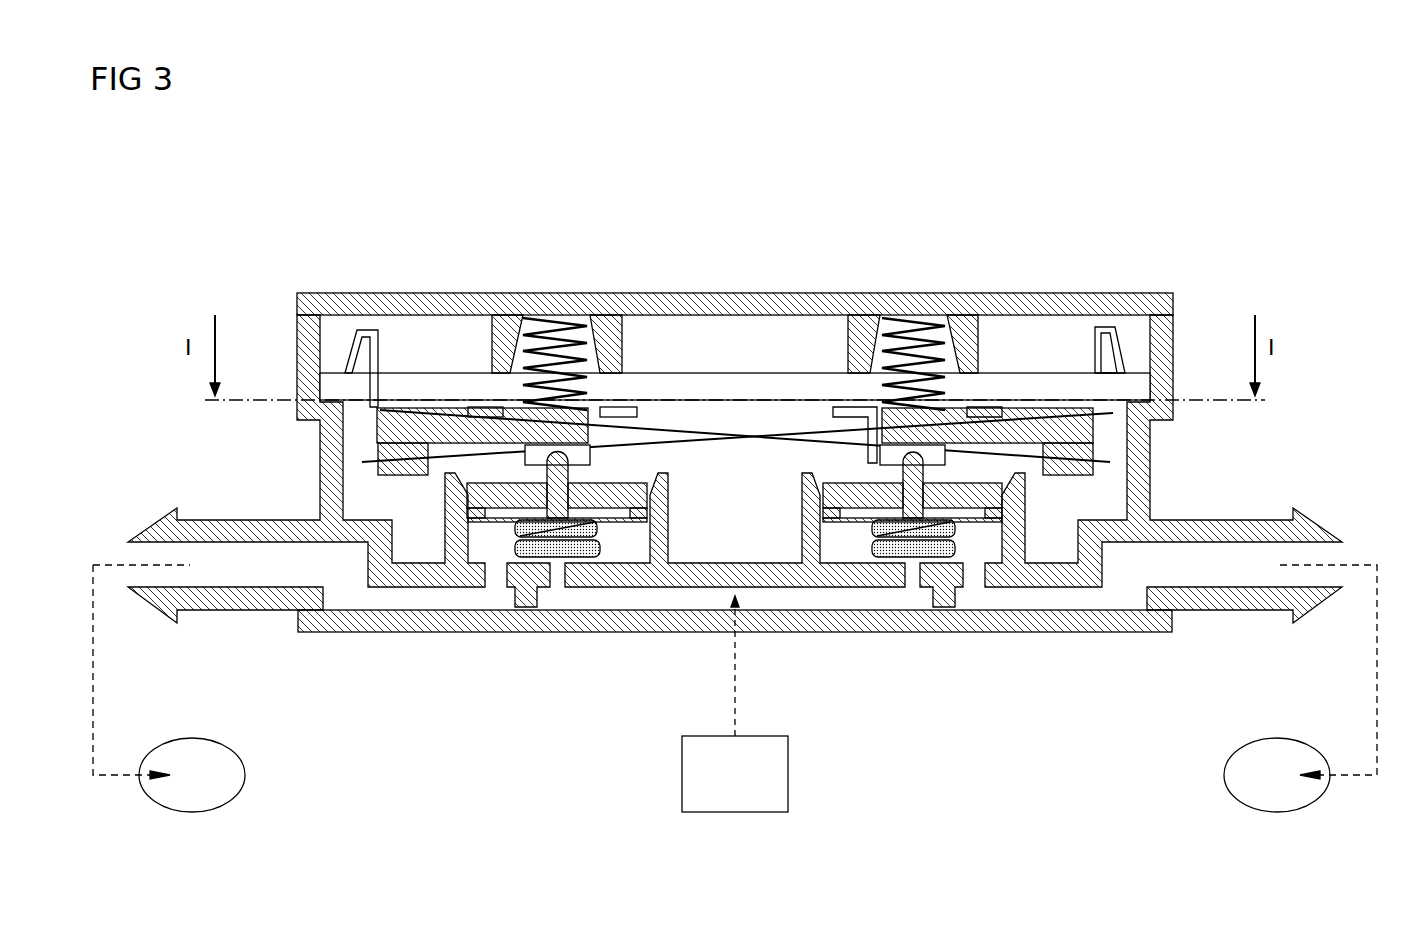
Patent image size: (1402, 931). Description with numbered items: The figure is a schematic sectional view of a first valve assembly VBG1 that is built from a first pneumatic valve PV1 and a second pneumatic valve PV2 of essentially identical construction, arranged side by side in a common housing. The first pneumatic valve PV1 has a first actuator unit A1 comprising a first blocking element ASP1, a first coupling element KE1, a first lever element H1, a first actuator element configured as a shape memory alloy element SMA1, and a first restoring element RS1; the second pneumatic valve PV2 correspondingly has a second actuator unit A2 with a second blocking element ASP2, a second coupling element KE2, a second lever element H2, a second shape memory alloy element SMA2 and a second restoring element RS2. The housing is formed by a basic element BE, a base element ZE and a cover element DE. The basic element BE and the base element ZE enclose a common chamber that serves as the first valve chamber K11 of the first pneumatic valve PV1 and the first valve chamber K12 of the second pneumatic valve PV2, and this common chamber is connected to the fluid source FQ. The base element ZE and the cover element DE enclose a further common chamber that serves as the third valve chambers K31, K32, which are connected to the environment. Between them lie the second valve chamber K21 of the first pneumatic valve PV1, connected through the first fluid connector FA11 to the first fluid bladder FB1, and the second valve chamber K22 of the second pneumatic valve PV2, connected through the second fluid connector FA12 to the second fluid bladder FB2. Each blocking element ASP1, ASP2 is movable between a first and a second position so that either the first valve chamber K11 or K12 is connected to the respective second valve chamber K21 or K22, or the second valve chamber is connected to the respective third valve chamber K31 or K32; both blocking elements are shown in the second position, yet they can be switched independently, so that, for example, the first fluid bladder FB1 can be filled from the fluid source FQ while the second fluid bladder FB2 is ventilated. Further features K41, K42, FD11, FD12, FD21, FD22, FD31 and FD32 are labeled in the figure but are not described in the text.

The cover element DE is at (1160, 300).
The second valve chamber of the first pneumatic valve K21 is at (347, 582).
The second valve chamber of the second pneumatic valve K22 is at (1125, 583).
The first valve chamber of the first pneumatic valve K11 is at (703, 597).
The first valve chamber of the second pneumatic valve K12 is at (793, 597).
The channel K41 is at (617, 545).
The channel K42 is at (1003, 590).
The third valve chamber of the first pneumatic valve K31 is at (740, 455).
The third valve chamber of the second pneumatic valve K32 is at (917, 435).
The valve seat FD21 is at (498, 575).
The valve seat FD22 is at (972, 575).
The sealing element FD11 is at (557, 577).
The sealing element FD12 is at (913, 577).
The plate FD31 is at (607, 397).
The plate hook FD32 is at (897, 465).
The basic element BE is at (840, 620).
The first fluid connector FA11 is at (227, 595).
The second fluid connector FA12 is at (1233, 595).
The first restoring element RS1 is at (575, 425).
The second restoring element RS2 is at (900, 470).
The first lever element H1 is at (407, 423).
The second lever element H2 is at (1070, 420).
The first shape memory alloy element SMA1 is at (455, 440).
The second shape memory alloy element SMA2 is at (1030, 430).
The first coupling element KE1 is at (565, 495).
The second coupling element KE2 is at (947, 518).
The first blocking element ASP1 is at (452, 540).
The second blocking element ASP2 is at (1013, 540).
The base element ZE is at (751, 666).
The fluid source FQ is at (788, 775).
The first fluid bladder FB1 is at (245, 775).
The second fluid bladder FB2 is at (1224, 775).
The first actuator unit A1 is at (360, 487).
The second actuator unit A2 is at (1110, 487).
The first pneumatic valve PV1 is at (440, 205).
The second pneumatic valve PV2 is at (1030, 205).
The first valve assembly VBG1 is at (933, 142).